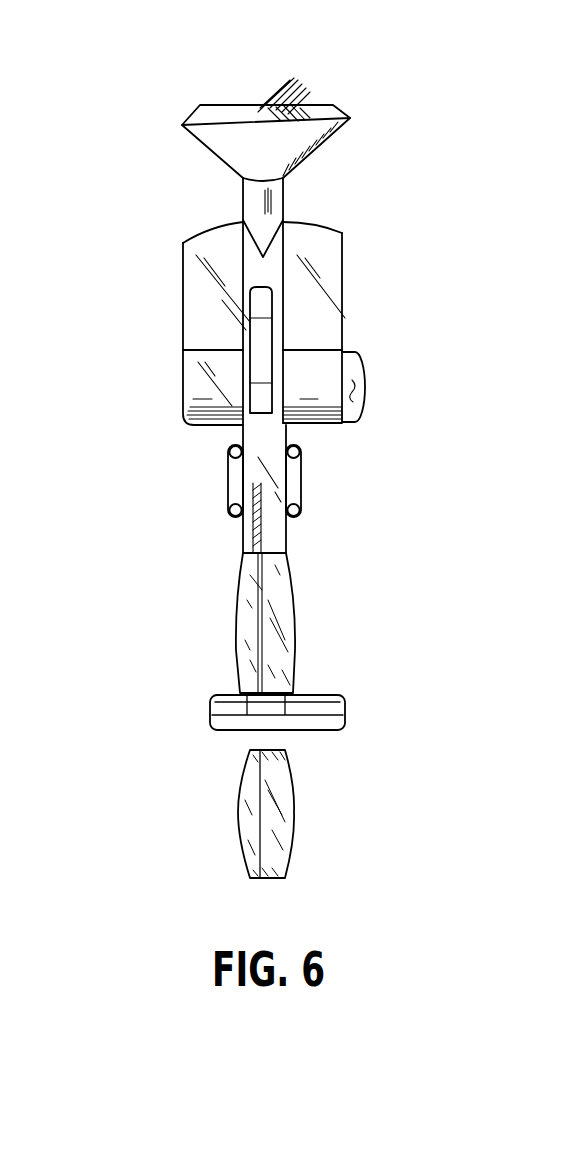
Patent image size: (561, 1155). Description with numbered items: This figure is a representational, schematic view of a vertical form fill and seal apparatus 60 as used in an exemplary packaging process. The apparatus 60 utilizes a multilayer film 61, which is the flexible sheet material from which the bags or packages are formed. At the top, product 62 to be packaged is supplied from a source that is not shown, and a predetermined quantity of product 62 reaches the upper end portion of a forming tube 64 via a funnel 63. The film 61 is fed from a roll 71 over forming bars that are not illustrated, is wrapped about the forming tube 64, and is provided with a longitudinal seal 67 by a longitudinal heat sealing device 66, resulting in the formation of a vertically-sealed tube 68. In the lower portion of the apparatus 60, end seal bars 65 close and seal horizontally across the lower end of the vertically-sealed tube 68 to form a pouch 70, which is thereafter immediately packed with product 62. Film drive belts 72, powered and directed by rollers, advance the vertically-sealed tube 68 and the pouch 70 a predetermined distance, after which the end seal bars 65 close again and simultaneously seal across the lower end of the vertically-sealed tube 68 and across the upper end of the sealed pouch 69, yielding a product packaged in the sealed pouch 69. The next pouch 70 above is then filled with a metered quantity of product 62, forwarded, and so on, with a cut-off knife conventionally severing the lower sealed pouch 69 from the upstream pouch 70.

The vertical form fill and seal apparatus 60 is at (147, 282).
The multilayer film 61 is at (341, 275).
The product 62 is at (299, 80).
The funnel 63 is at (306, 148).
The forming tube 64 is at (284, 203).
The end seal bars 65 is at (305, 702).
The longitudinal heat sealing device 66 is at (265, 337).
The longitudinal seal 67 is at (302, 434).
The vertically-sealed tube 68 is at (242, 436).
The sealed pouch 69 is at (295, 793).
The pouch 70 is at (283, 648).
The roll 71 is at (360, 366).
The film drive belts 72 is at (227, 483).